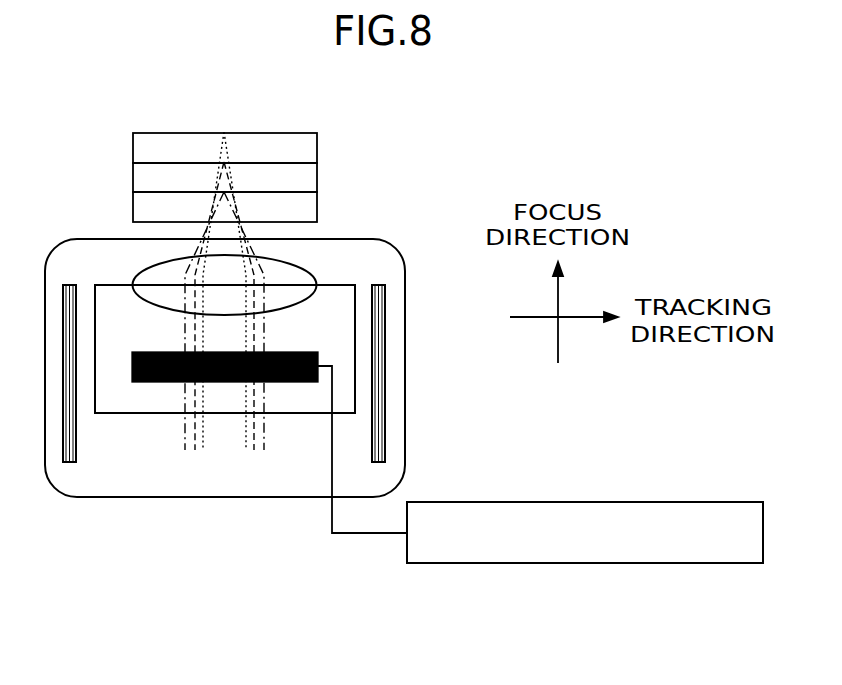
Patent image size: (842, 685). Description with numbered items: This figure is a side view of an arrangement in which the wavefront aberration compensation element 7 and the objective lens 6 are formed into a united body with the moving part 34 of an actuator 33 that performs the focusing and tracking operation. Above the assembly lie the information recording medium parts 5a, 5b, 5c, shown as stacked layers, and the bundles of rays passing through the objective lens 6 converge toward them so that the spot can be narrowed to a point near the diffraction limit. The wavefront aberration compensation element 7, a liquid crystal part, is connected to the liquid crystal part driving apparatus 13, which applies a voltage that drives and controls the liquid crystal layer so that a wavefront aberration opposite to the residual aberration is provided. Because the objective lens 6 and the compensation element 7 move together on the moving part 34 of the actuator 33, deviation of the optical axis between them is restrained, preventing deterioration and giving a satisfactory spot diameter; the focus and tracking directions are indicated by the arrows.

The information recording medium part 5a is at (133, 207).
The information recording medium part 5b is at (133, 177).
The information recording medium part 5c is at (133, 147).
The objective lens 6 is at (292, 282).
The wavefront aberration compensation element 7 is at (152, 382).
The liquid crystal part driving apparatus 13 is at (594, 501).
The actuator 33 is at (92, 498).
The moving part 34 is at (333, 298).